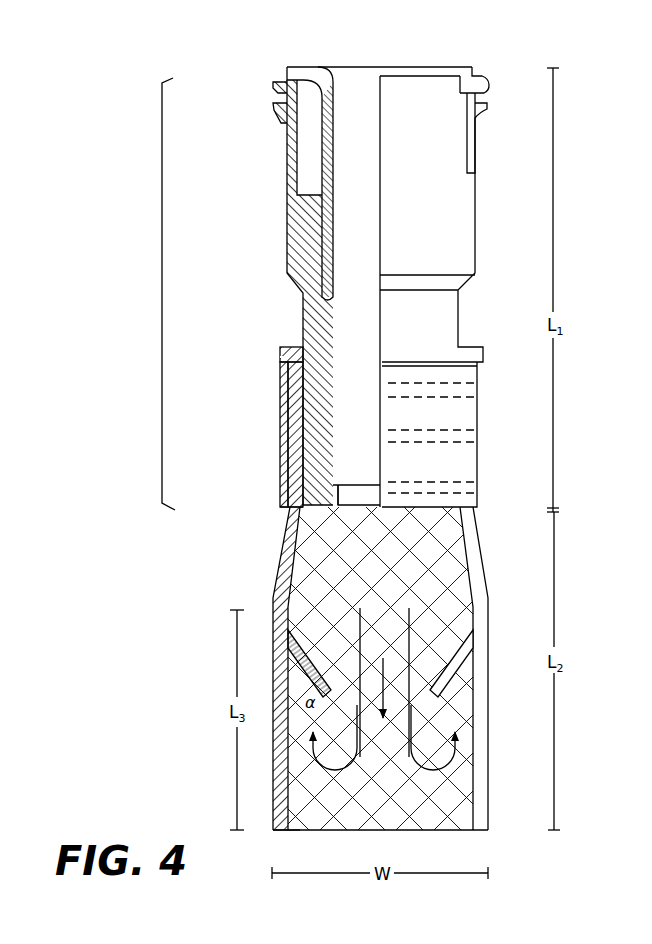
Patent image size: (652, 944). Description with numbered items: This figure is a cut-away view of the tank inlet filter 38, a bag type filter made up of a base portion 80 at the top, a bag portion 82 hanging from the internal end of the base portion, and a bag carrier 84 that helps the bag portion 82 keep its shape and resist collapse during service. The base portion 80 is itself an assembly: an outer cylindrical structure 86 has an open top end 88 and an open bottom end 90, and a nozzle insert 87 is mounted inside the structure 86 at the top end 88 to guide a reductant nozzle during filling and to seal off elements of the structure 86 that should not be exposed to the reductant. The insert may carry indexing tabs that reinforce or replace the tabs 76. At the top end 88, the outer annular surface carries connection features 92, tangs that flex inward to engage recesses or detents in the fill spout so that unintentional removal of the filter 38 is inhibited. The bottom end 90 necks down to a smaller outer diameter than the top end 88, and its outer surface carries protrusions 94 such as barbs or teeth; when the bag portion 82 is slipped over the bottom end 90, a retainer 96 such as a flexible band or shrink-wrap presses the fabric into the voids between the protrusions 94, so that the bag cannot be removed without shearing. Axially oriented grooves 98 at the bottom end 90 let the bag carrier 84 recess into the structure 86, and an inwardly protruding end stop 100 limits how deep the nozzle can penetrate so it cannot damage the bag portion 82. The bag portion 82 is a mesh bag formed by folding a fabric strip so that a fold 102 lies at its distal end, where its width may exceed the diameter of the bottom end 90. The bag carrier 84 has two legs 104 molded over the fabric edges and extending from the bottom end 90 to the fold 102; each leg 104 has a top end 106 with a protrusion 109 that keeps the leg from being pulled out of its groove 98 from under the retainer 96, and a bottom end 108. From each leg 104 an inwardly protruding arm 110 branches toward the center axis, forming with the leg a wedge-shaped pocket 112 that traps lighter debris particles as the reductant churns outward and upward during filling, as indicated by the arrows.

The tank inlet filter 38 is at (586, 156).
The tabs 76 is at (276, 85).
The base portion 80 is at (162, 237).
The bag portion 82 is at (394, 781).
The bag carrier 84 is at (326, 681).
The outer cylindrical structure 86 is at (320, 270).
The nozzle insert 87 is at (302, 70).
The top end 88 is at (340, 168).
The bottom end 90 is at (247, 500).
The connection features 92 is at (277, 111).
The protrusions 94 is at (478, 374).
The retainer 96 is at (279, 410).
The grooves 98 is at (297, 362).
The end stop 100 is at (340, 490).
The fold 102 is at (457, 833).
The legs 104 is at (283, 580).
The top end 106 is at (245, 411).
The bottom end 108 is at (212, 818).
The protrusion 109 is at (279, 357).
The arm 110 is at (330, 676).
The wedge-shaped pocket 112 is at (303, 678).